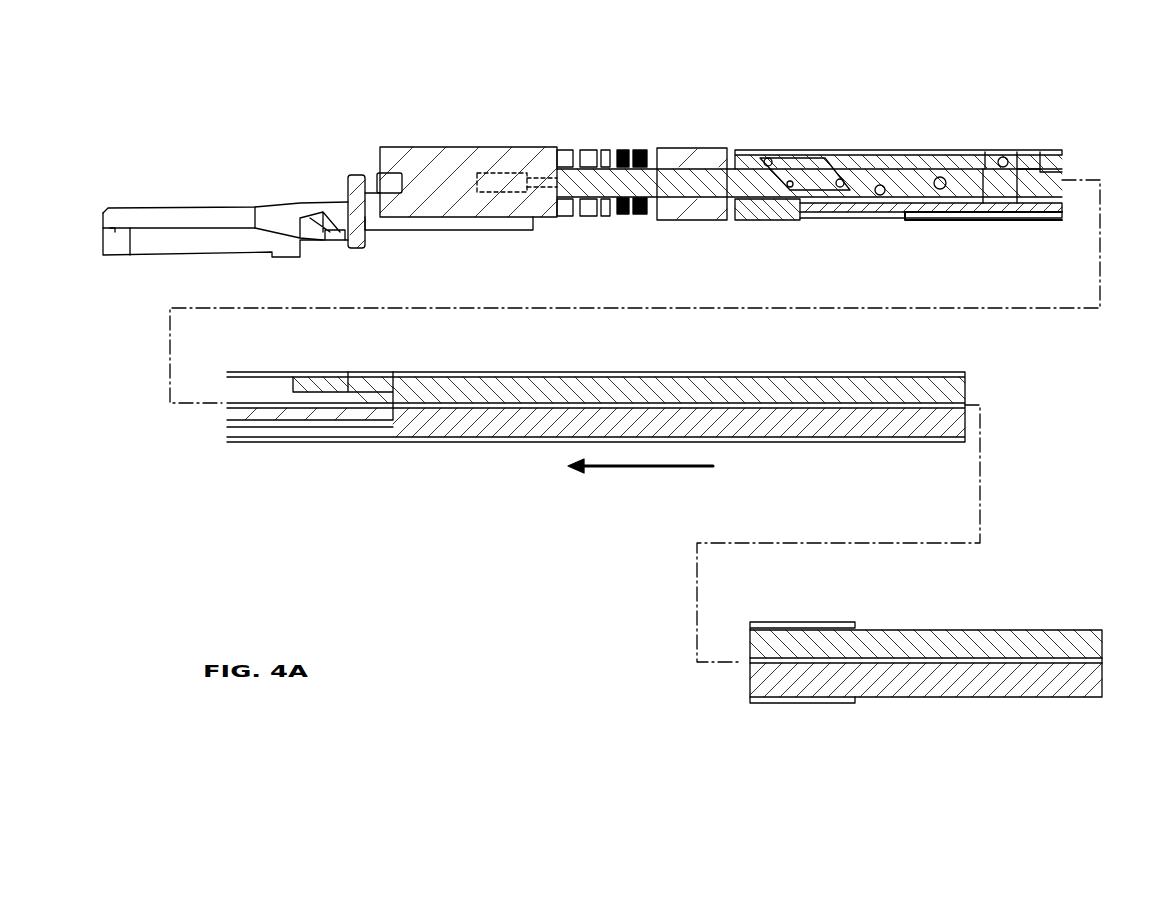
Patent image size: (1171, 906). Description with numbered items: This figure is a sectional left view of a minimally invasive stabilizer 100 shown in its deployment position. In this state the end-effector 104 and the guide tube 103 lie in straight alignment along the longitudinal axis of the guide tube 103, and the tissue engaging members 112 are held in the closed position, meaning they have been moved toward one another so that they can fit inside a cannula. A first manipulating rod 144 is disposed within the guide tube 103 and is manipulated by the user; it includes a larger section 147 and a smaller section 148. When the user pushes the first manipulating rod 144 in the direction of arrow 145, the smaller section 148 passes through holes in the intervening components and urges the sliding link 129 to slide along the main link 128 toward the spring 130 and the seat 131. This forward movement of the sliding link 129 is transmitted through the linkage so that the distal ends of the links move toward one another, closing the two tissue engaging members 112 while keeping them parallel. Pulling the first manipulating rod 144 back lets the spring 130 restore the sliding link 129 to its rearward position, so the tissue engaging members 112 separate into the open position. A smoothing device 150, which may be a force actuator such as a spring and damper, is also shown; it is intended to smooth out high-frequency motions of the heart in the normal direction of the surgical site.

The minimally invasive stabilizer 100 is at (185, 540).
The guide tube 103 is at (860, 152).
The end-effector 104 is at (492, 115).
The tissue engaging members 112 is at (182, 199).
The main link 128 is at (742, 185).
The sliding link 129 is at (705, 148).
The spring 130 is at (630, 150).
The seat 131 is at (605, 152).
The first manipulating rod 144 is at (890, 705).
The arrow 145 is at (632, 470).
The larger section 147 is at (508, 428).
The smaller section 148 is at (812, 213).
The smoothing device 150 is at (1025, 198).